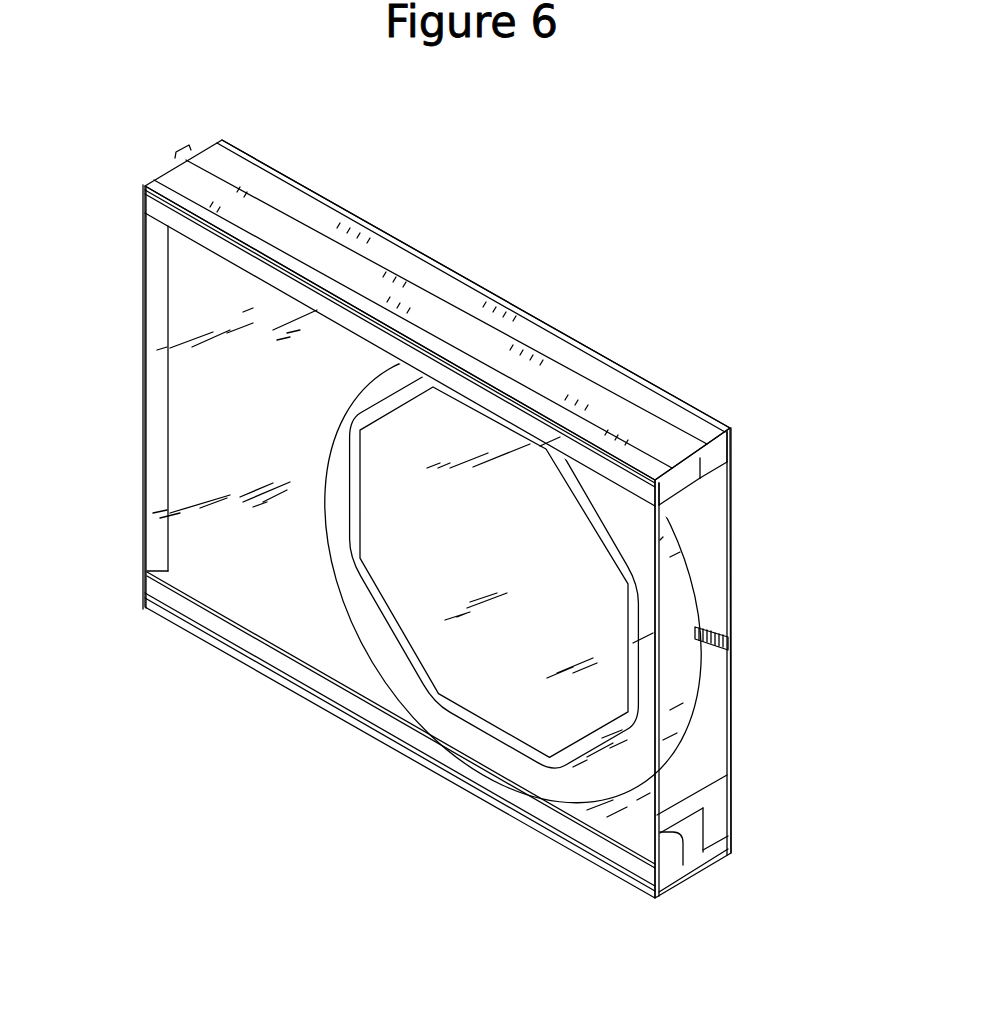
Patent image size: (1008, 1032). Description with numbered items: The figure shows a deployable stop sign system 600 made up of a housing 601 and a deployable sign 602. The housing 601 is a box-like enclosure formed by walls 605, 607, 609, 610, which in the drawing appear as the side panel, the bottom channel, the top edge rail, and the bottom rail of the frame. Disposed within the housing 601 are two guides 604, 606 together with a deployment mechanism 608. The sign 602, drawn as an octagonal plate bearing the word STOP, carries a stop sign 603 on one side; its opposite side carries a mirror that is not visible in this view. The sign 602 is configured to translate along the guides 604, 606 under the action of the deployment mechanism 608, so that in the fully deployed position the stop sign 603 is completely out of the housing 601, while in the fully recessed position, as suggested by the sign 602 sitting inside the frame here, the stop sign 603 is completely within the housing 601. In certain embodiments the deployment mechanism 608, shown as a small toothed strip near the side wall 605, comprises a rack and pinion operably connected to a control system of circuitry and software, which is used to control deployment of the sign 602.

The deployable stop sign system 600 is at (647, 328).
The housing 601 is at (748, 478).
The deployable sign 602 is at (375, 645).
The stop sign 603 is at (505, 716).
The guide 604 is at (632, 835).
The wall 605 is at (735, 522).
The guide 606 is at (358, 287).
The wall 607 is at (683, 873).
The deployment mechanism 608 is at (728, 630).
The wall 609 is at (316, 191).
The wall 610 is at (258, 674).